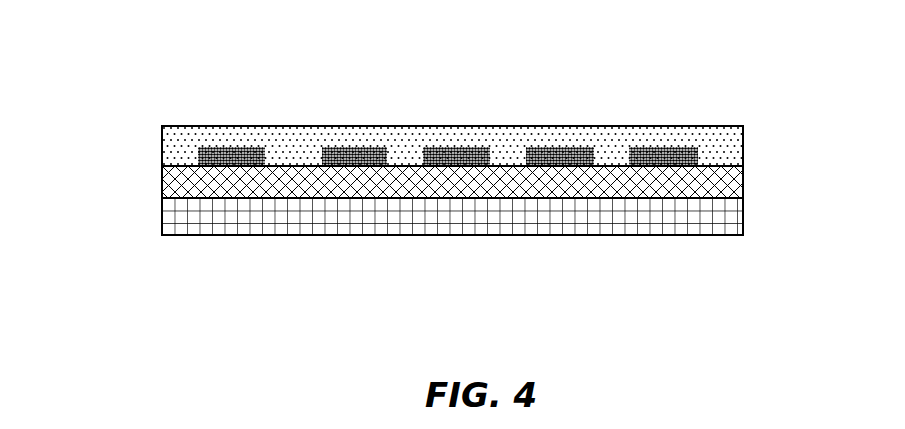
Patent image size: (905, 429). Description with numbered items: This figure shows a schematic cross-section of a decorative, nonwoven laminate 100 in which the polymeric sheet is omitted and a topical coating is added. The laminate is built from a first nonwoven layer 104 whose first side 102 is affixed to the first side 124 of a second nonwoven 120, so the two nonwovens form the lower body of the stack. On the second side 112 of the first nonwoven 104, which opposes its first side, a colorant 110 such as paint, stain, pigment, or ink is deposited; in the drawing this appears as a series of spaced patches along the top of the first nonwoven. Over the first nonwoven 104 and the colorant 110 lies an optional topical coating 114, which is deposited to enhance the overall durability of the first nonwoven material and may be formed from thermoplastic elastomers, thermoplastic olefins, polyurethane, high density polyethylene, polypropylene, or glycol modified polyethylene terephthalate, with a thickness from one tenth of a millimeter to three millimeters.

The decorative, nonwoven laminate 100 is at (142, 61).
The topical coating 114 is at (175, 150).
The colorant 110 is at (660, 150).
The second side of the first nonwoven 112 is at (617, 165).
The first nonwoven layer 104 is at (165, 167).
The second nonwoven 120 is at (177, 218).
The first side of the first nonwoven layer 102 is at (677, 198).
The first side of the second nonwoven 124 is at (720, 197).